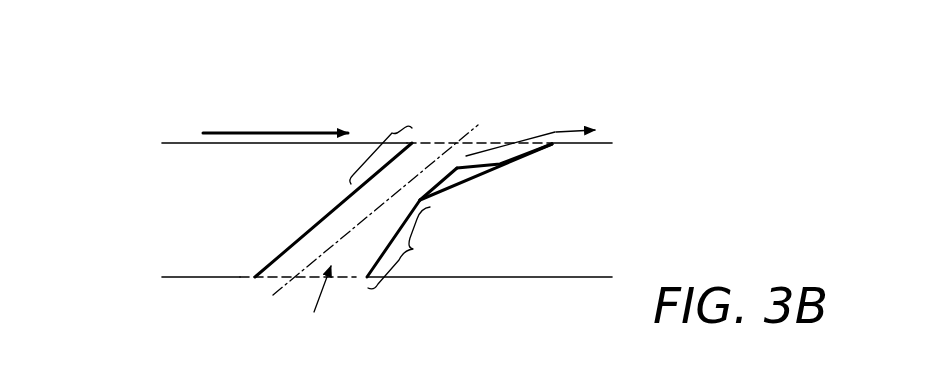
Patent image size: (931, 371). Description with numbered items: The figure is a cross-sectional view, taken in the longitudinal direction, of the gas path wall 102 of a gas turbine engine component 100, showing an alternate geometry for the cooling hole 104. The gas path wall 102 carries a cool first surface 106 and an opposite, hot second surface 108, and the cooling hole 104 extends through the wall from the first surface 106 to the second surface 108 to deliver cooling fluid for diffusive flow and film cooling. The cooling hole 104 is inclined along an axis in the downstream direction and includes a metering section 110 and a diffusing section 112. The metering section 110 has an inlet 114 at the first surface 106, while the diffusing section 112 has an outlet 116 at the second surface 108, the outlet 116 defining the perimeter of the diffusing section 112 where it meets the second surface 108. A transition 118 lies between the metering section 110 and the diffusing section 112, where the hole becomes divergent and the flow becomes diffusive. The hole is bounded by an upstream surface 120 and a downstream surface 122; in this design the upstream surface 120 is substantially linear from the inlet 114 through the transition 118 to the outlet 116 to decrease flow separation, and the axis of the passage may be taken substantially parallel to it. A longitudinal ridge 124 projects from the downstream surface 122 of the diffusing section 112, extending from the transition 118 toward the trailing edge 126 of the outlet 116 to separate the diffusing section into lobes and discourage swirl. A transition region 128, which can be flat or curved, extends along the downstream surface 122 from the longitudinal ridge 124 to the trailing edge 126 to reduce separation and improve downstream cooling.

The gas turbine engine component 100 is at (106, 90).
The gas path wall 102 is at (241, 192).
The cooling hole 104 is at (384, 244).
The first surface 106 is at (527, 278).
The second surface 108 is at (258, 143).
The metering section 110 is at (424, 244).
The diffusing section 112 is at (381, 142).
The inlet 114 is at (348, 278).
The outlet 116 is at (433, 141).
The transition 118 is at (434, 200).
The upstream surface 120 is at (283, 252).
The downstream surface 122 is at (495, 167).
The longitudinal ridge 124 is at (481, 163).
The trailing edge 126 is at (558, 128).
The transition region 128 is at (546, 149).